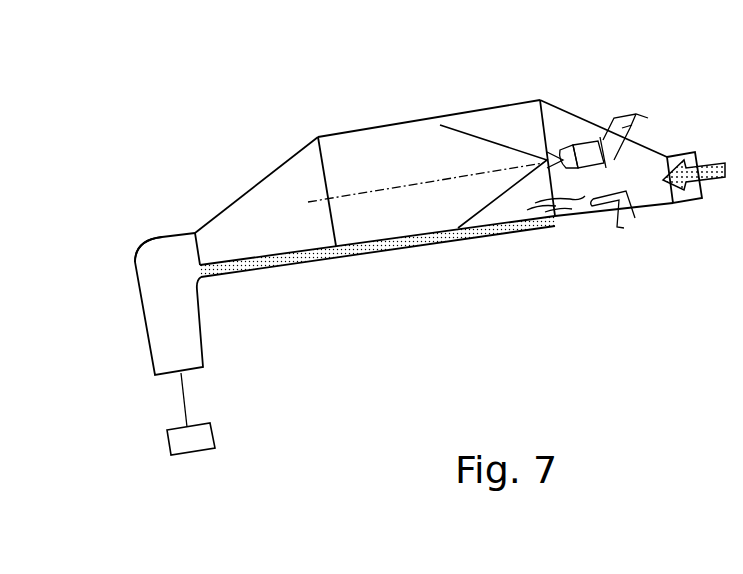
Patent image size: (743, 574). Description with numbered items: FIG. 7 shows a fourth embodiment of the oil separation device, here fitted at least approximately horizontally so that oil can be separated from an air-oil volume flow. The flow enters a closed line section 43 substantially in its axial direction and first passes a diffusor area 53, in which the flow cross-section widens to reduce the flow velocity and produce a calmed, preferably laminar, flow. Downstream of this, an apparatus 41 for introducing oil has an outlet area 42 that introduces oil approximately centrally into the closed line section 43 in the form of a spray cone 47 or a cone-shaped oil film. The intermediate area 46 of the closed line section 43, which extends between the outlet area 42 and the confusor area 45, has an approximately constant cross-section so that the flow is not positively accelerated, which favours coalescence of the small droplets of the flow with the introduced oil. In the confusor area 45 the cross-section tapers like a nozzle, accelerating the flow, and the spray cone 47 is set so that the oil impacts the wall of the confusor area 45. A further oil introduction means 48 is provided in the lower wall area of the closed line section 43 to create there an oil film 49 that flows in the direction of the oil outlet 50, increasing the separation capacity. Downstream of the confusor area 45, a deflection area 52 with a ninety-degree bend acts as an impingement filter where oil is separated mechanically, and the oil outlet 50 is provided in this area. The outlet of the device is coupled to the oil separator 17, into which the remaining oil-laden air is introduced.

The oil separator 17 is at (190, 438).
The apparatus for introducing oil 41 is at (592, 123).
The outlet area 42 is at (562, 156).
The closed line section 43 is at (478, 100).
The confusor area 45 is at (257, 184).
The intermediate area 46 is at (415, 120).
The spray cone 47 is at (496, 204).
The further oil introduction means 48 is at (600, 229).
The oil film 49 is at (347, 253).
The oil outlet 50 is at (132, 328).
The deflection area 52 is at (130, 218).
The diffusor area 53 is at (586, 128).